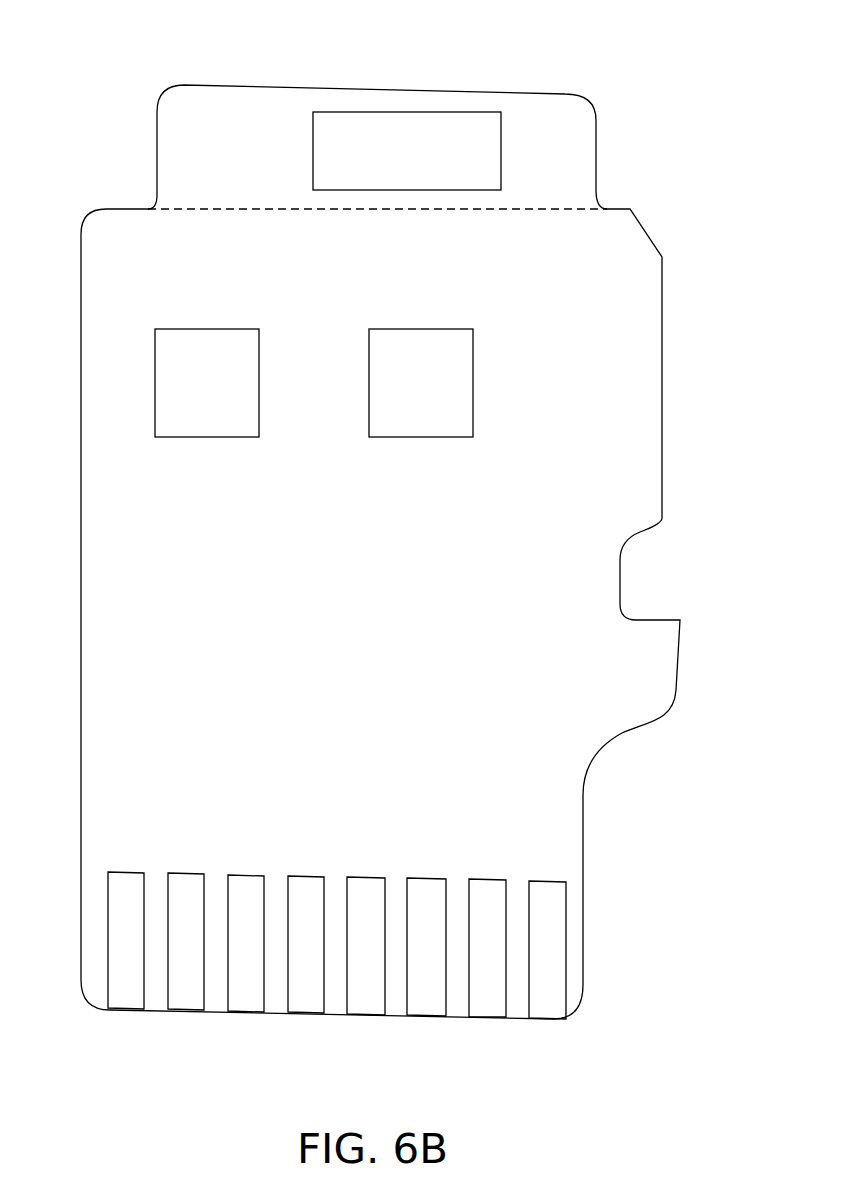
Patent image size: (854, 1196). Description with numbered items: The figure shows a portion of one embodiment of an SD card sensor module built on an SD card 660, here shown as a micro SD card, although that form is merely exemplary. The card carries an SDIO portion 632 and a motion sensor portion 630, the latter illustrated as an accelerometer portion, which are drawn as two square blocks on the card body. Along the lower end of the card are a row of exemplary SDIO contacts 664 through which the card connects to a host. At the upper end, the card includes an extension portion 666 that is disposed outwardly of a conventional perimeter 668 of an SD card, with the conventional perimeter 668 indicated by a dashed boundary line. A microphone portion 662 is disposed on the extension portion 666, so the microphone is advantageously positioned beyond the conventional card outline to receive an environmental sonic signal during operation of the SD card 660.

The SD card 660 is at (598, 157).
The extension portion 666 is at (559, 117).
The conventional perimeter 668 is at (402, 211).
The microphone portion 662 is at (387, 122).
The motion sensor portion 630 is at (201, 329).
The SDIO portion 632 is at (474, 384).
The SDIO contacts 664 is at (300, 876).